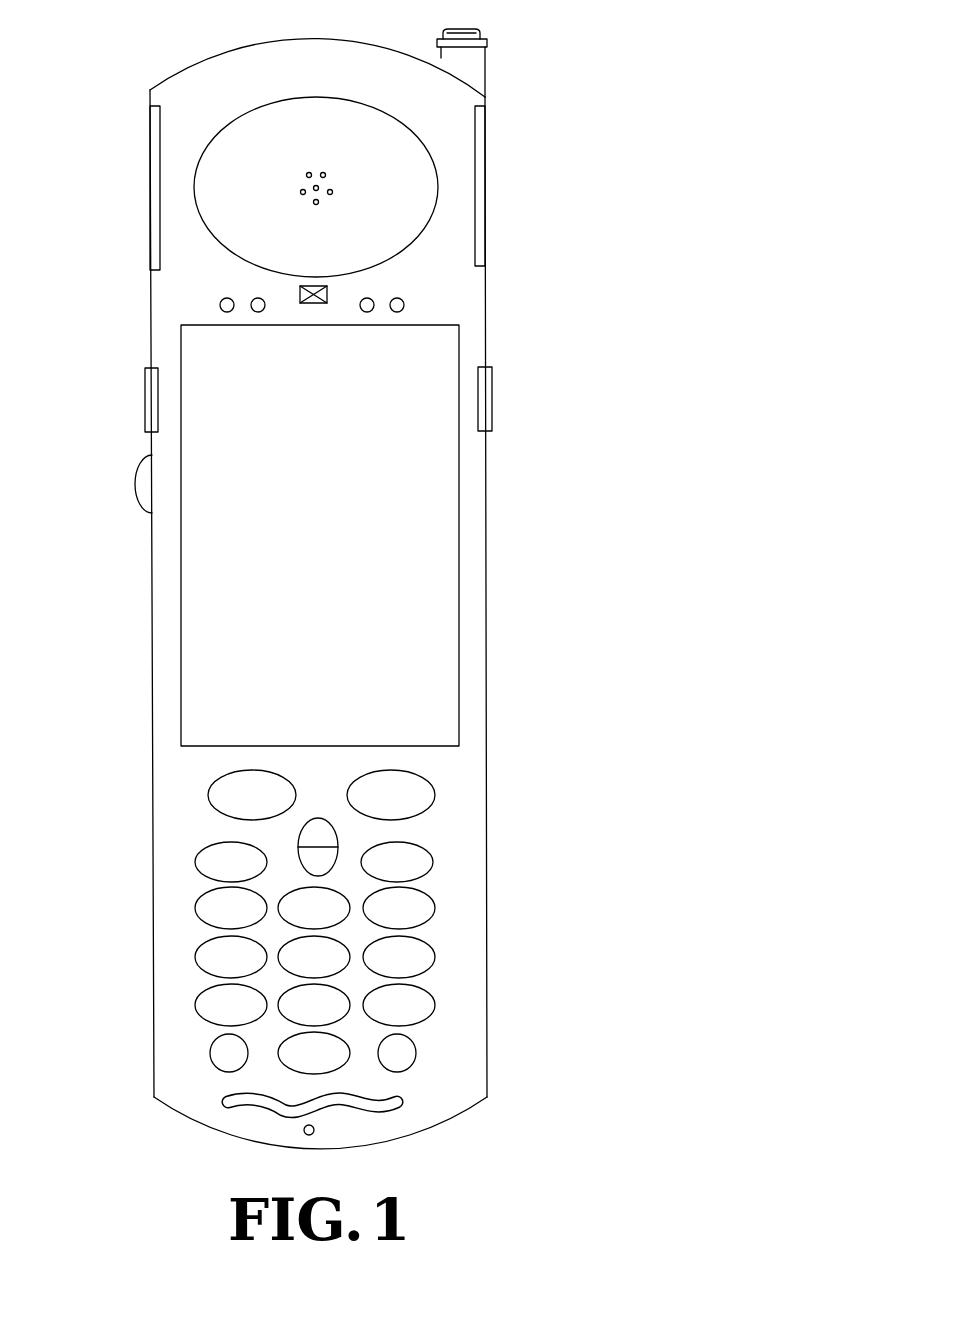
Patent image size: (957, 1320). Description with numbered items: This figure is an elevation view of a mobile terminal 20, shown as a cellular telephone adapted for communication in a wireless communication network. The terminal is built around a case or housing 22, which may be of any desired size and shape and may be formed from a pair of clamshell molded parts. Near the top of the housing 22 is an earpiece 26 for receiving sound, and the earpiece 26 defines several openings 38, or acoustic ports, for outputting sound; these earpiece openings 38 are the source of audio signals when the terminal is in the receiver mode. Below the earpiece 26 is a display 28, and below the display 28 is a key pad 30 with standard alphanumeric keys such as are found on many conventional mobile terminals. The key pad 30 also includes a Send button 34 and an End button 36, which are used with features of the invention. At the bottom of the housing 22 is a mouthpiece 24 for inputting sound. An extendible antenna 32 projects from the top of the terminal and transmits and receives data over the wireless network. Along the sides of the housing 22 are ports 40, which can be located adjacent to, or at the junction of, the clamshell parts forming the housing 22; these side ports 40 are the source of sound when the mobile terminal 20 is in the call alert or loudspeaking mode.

The mobile terminal 20 is at (568, 105).
The housing 22 is at (479, 629).
The mouthpiece 24 is at (304, 1130).
The earpiece 26 is at (421, 140).
The display 28 is at (459, 517).
The key pad 30 is at (429, 884).
The extendible antenna 32 is at (487, 57).
The Send button 34 is at (413, 791).
The End button 36 is at (223, 788).
The openings 38 is at (304, 174).
The ports 40 is at (153, 197).